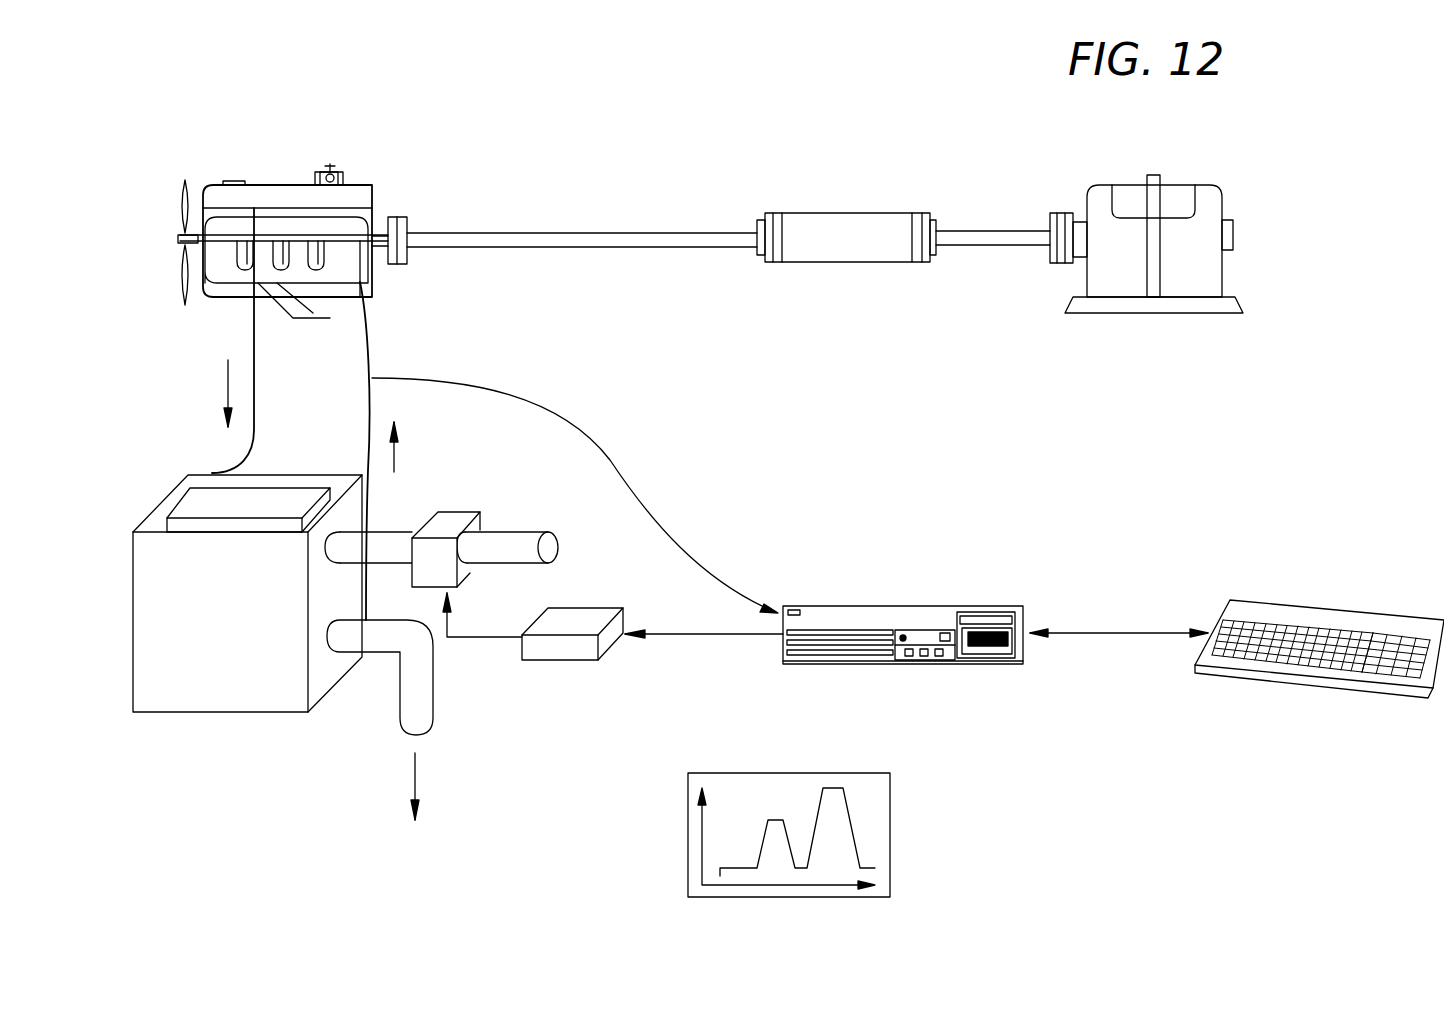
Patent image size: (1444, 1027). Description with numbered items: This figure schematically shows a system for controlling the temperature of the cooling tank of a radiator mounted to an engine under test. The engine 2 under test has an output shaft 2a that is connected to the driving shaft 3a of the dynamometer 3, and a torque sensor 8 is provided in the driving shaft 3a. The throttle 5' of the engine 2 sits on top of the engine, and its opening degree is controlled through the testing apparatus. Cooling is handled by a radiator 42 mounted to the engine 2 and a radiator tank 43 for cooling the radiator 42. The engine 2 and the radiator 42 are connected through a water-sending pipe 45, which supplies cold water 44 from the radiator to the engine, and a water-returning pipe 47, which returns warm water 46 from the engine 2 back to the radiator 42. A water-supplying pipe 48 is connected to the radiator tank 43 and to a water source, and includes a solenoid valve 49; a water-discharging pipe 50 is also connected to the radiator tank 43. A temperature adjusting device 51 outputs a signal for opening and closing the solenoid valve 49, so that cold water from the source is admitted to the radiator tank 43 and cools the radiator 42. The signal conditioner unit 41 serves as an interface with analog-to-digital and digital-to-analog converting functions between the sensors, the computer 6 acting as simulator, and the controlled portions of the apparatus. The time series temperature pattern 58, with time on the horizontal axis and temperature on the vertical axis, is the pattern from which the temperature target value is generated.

The engine under test 2 is at (280, 185).
The throttle 5' is at (319, 120).
The output shaft 2a is at (378, 237).
The torque sensor 8 is at (847, 213).
The driving shaft 3a is at (995, 231).
The dynamometer 3 is at (1220, 187).
The water-returning pipe 47 is at (253, 325).
The warm water 46 is at (228, 380).
The water-sending pipe 45 is at (372, 356).
The cold water 44 is at (394, 461).
The radiator 42 is at (205, 503).
The radiator tank 43 is at (193, 713).
The solenoid valve 49 is at (458, 512).
The water-supplying pipe 48 is at (527, 528).
The water-discharging pipe 50 is at (382, 652).
The temperature adjusting device 51 is at (567, 660).
The signal conditioner unit 41 is at (982, 664).
The computer 6 is at (1383, 693).
The time series temperature pattern 58 is at (890, 833).